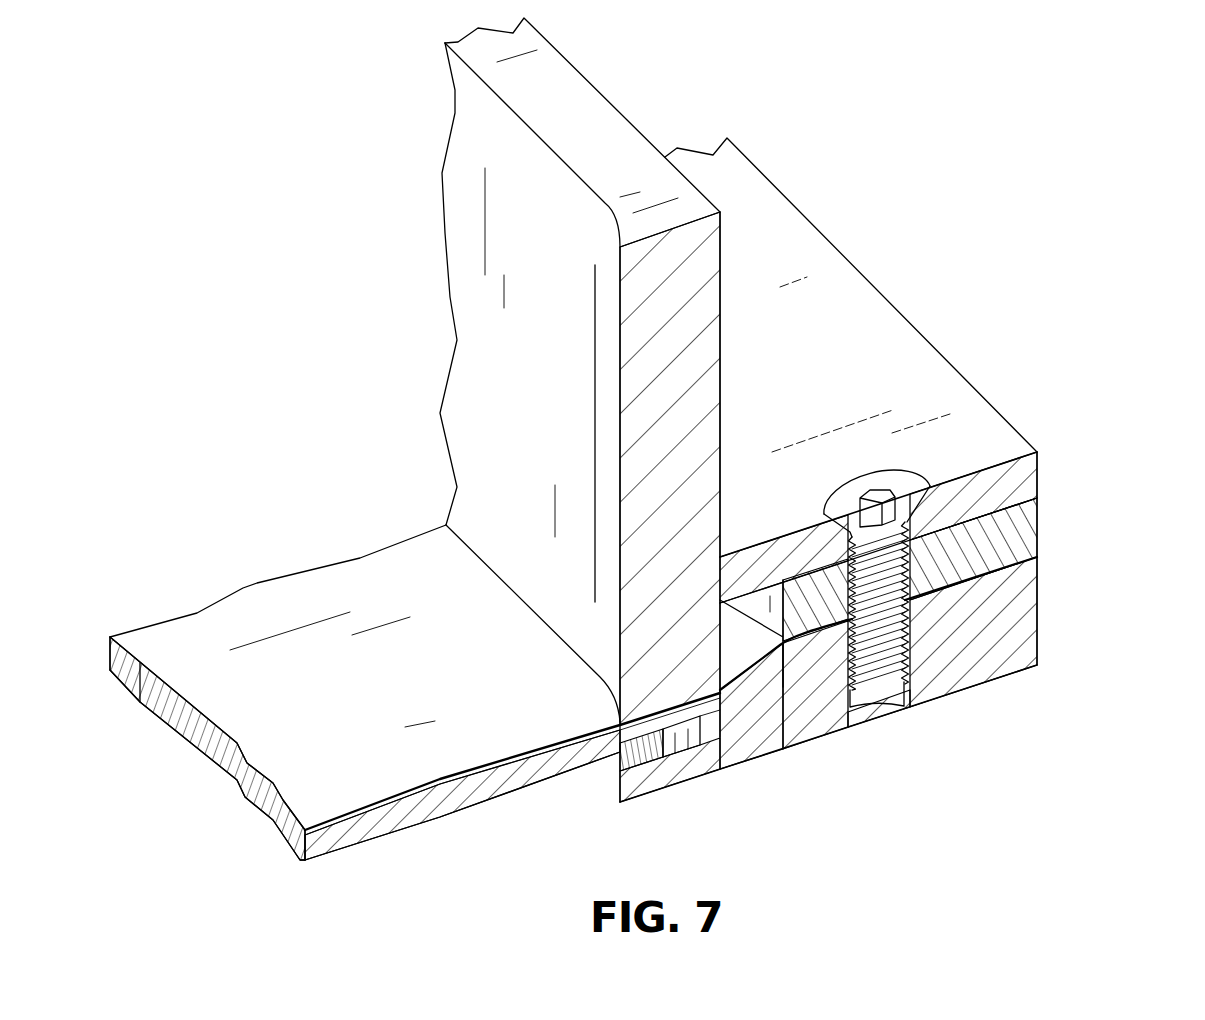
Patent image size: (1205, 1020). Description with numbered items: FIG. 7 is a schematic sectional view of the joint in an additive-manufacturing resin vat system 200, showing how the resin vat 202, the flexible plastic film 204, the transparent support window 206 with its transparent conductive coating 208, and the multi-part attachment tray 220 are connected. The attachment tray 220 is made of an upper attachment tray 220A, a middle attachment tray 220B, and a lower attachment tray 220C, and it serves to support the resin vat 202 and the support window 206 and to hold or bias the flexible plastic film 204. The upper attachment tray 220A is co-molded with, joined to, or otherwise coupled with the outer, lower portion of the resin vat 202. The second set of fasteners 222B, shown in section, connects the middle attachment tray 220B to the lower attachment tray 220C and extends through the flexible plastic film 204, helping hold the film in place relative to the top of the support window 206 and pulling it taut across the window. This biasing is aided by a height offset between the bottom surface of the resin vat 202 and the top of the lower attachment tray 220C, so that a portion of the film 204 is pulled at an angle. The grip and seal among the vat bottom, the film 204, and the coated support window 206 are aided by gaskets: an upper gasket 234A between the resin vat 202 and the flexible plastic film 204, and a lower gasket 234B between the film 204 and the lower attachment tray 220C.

The resin vat system 200 is at (655, 455).
The resin vat 202 is at (712, 256).
The flexible plastic film 204 is at (763, 674).
The transparent support window 206 is at (415, 709).
The transparent conductive coating 208 is at (510, 793).
The multi-part attachment tray 220 is at (900, 539).
The upper attachment tray 220A is at (873, 330).
The middle attachment tray 220B is at (1030, 540).
The lower attachment tray 220C is at (851, 679).
The second set of fasteners 222B is at (890, 652).
The upper gasket 234A is at (650, 768).
The lower gasket 234B is at (730, 750).